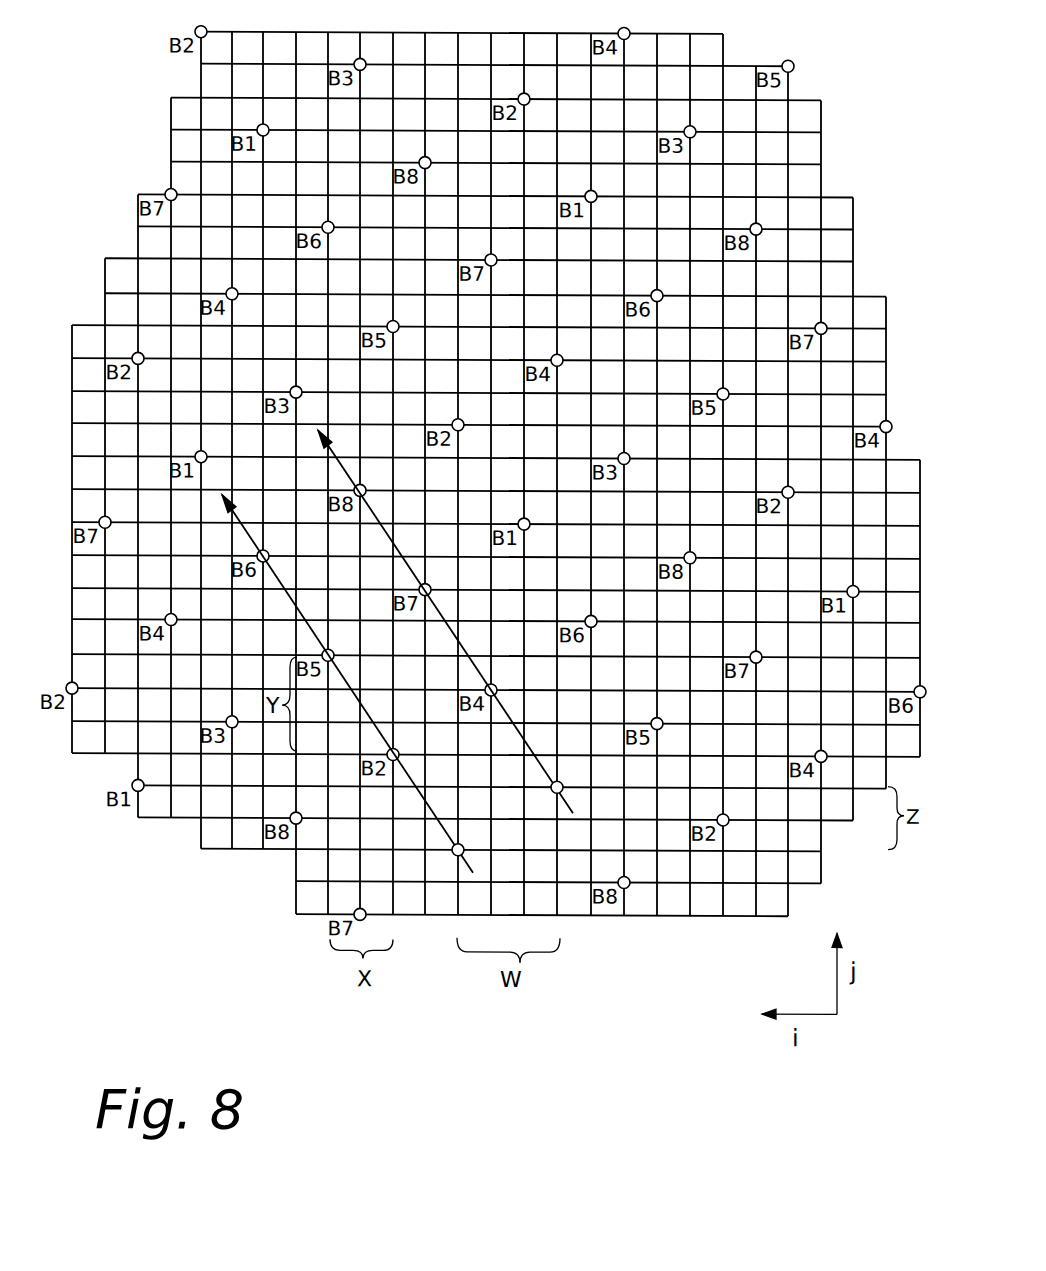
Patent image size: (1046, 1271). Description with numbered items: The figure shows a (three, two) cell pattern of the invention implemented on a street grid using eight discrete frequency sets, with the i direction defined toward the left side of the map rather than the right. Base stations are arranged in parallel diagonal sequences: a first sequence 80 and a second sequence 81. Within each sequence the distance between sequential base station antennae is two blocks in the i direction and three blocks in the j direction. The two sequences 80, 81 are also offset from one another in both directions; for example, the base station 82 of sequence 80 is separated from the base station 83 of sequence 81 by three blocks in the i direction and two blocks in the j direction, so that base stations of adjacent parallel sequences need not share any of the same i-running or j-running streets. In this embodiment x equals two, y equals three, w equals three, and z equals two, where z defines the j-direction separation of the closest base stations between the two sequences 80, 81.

The sequence 80 is at (411, 808).
The sequence 81 is at (512, 748).
The base station B1 82 is at (470, 843).
The base station B3 83 is at (577, 782).